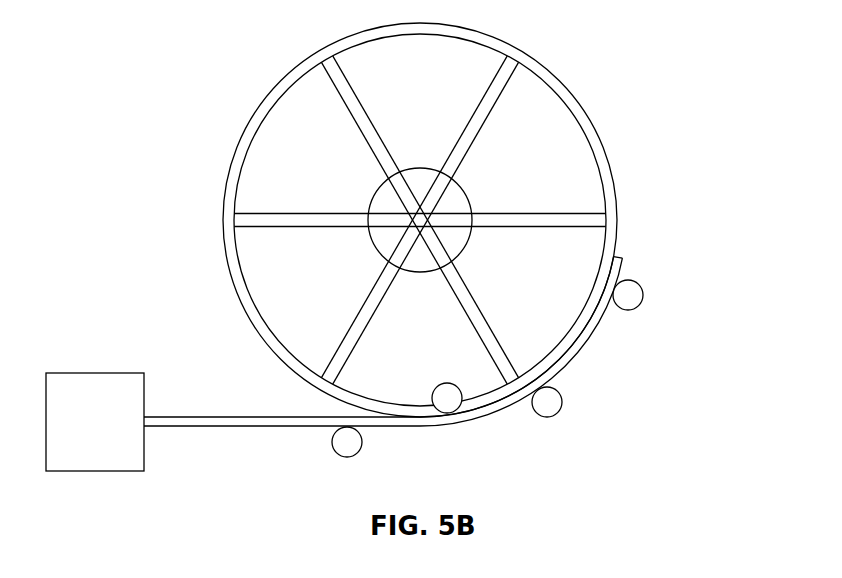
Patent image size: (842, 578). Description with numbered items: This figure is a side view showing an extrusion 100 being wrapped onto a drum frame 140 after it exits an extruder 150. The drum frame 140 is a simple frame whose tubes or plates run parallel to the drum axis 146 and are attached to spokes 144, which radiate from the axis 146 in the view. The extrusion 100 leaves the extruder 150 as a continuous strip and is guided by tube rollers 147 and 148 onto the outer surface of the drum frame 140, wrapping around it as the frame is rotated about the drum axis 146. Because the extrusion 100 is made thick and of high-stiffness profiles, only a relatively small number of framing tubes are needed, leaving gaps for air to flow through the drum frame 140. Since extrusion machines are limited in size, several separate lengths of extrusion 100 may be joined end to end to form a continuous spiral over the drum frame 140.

The extrusion 100 is at (257, 418).
The drum frame 140 is at (464, 220).
The spokes 144 is at (570, 220).
The drum axis 146 is at (420, 220).
The tube roller 147 is at (362, 442).
The tube roller 148 is at (461, 407).
The extruder 150 is at (95, 388).